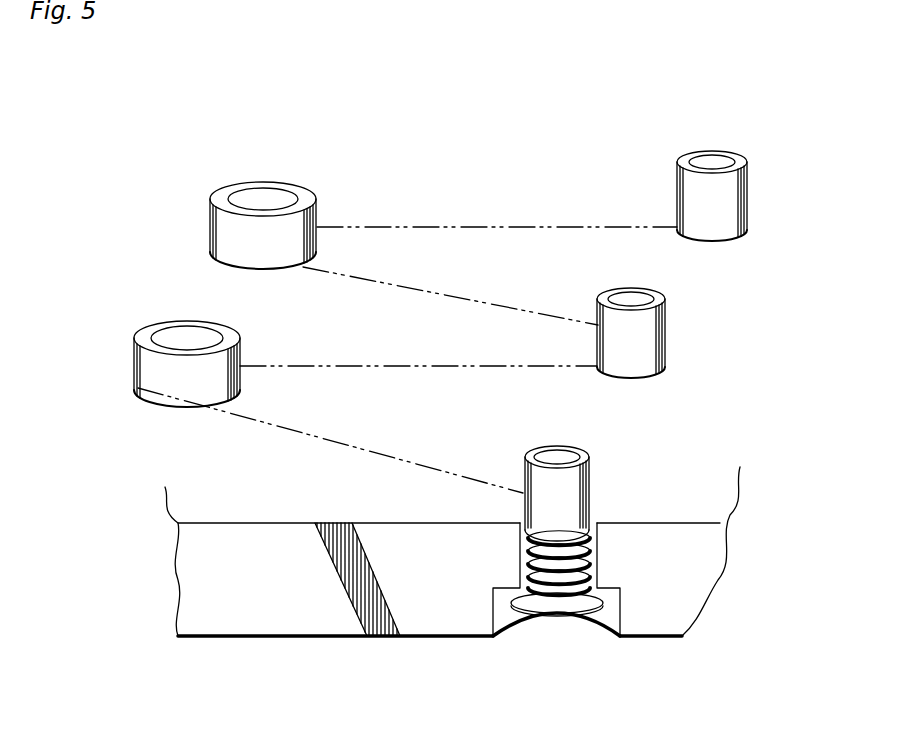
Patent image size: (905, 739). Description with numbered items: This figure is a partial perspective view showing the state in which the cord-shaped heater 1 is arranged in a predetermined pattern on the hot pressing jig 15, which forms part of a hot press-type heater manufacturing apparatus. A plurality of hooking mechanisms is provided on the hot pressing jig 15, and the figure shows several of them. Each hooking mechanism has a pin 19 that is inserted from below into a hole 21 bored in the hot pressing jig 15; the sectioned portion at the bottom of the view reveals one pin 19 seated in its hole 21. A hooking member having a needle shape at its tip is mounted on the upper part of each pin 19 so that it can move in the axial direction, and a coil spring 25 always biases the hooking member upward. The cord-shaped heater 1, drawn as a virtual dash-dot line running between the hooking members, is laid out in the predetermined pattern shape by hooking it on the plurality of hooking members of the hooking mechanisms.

The cord-shaped heater 1 is at (292, 435).
The hot pressing jig 15 is at (257, 622).
The pin 19 is at (548, 605).
The hole 21 is at (590, 622).
The coil spring 25 is at (590, 545).